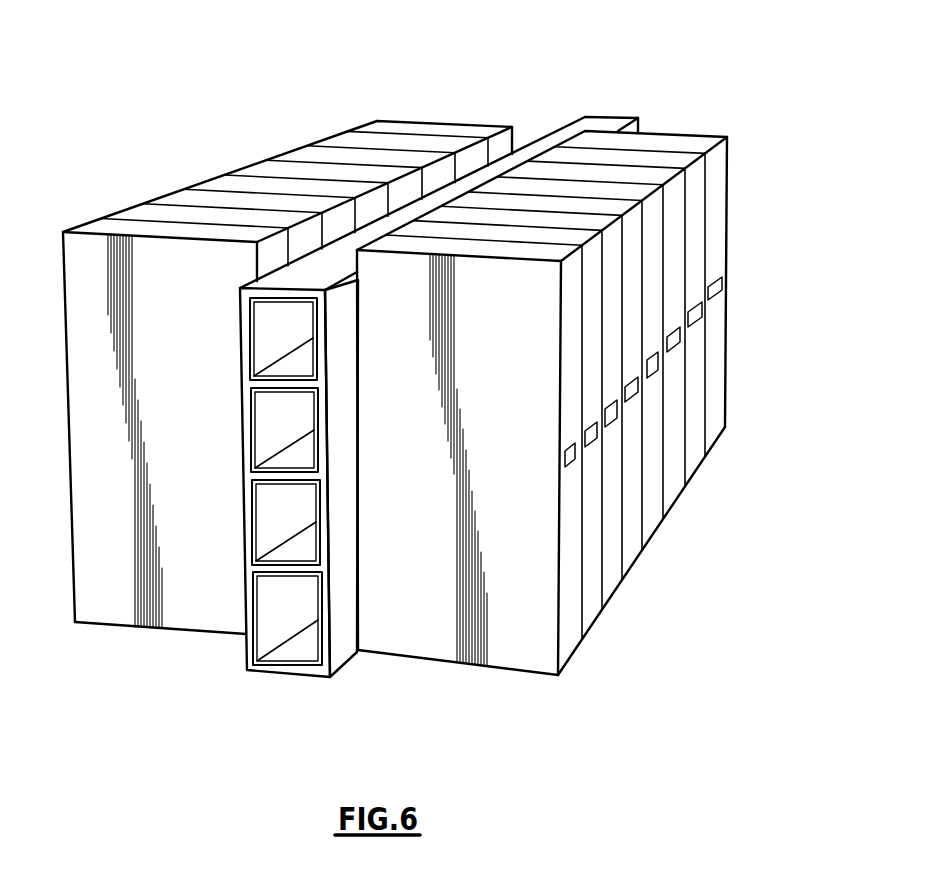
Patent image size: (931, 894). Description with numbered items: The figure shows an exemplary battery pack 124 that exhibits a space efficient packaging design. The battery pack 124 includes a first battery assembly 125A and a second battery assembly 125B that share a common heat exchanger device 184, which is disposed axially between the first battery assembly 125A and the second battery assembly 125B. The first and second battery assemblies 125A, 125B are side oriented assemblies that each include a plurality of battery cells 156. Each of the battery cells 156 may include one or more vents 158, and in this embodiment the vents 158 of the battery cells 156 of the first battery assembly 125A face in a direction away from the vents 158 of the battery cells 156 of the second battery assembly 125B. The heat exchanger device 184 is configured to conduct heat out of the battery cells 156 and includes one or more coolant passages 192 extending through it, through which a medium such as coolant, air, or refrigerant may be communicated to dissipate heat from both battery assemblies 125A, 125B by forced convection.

The battery pack 124 is at (422, 85).
The first battery assembly 125A is at (140, 141).
The second battery assembly 125B is at (697, 99).
The battery cells 156 is at (471, 153).
The vents 158 is at (606, 398).
The heat exchanger device 184 is at (323, 669).
The coolant passages 192 is at (272, 341).